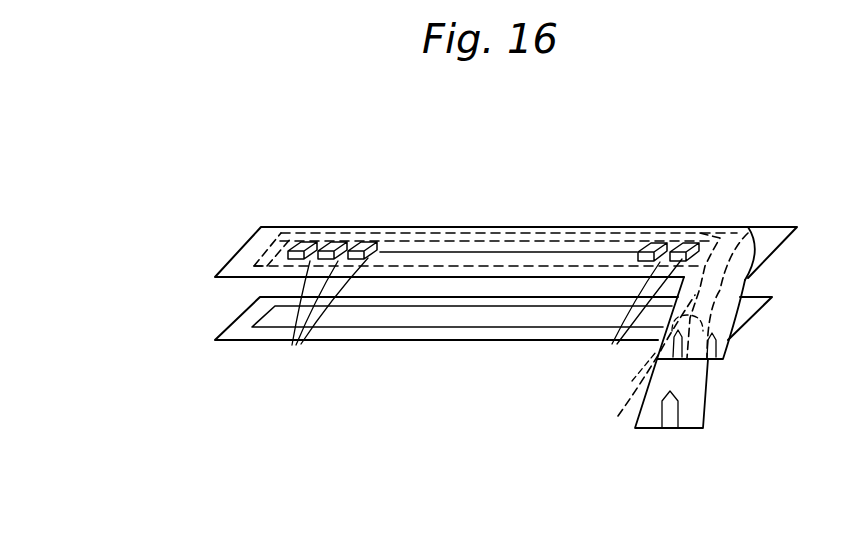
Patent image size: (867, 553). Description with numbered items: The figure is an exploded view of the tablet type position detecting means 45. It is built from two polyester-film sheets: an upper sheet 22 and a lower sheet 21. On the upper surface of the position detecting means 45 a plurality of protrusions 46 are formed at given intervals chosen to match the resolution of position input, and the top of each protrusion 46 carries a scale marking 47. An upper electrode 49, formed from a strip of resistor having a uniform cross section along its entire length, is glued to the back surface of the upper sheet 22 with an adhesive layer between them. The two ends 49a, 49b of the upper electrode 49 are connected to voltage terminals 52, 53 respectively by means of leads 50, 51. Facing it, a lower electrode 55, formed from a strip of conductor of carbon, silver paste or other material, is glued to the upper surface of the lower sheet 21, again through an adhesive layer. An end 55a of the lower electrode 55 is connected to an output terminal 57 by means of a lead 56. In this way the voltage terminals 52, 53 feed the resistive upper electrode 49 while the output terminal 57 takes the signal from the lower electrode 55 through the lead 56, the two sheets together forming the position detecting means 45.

The position detecting means 45 is at (696, 162).
The upper sheet 22 is at (247, 262).
The lower sheet 21 is at (243, 329).
The lower electrode 55 is at (430, 331).
The end of the lower electrode 55a is at (618, 377).
The upper electrode 49 is at (478, 231).
The end of the upper electrode 49a is at (710, 233).
The end of the upper electrode 49b is at (262, 246).
The protrusions 46 is at (351, 242).
The scale marking 47 is at (477, 319).
The lead 50 is at (748, 233).
The lead 51 is at (758, 246).
The voltage terminal 52 is at (638, 364).
The voltage terminal 53 is at (724, 349).
The lead 56 is at (677, 375).
The output terminal 57 is at (668, 421).